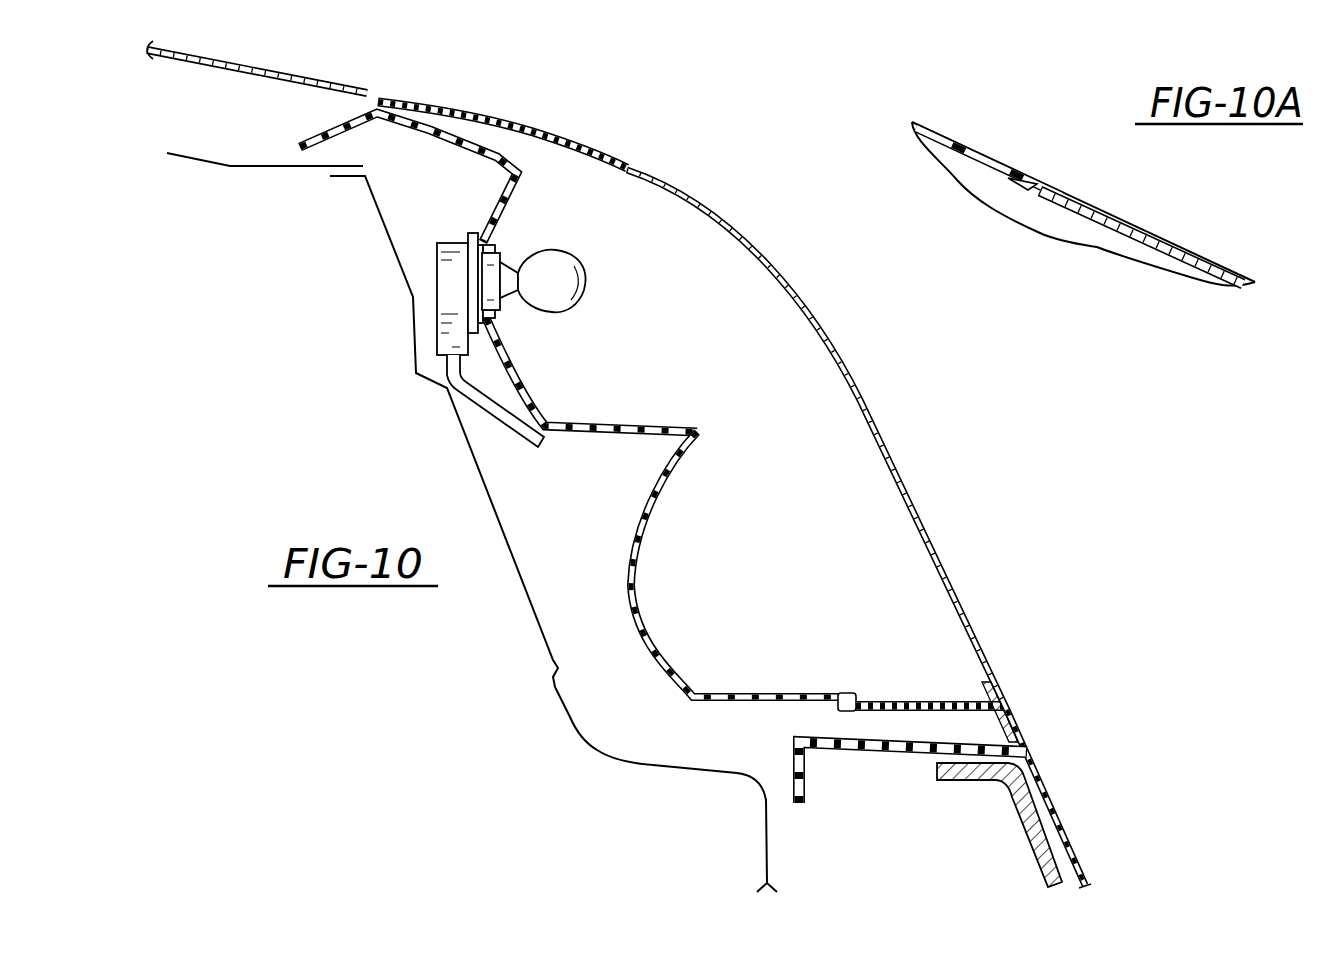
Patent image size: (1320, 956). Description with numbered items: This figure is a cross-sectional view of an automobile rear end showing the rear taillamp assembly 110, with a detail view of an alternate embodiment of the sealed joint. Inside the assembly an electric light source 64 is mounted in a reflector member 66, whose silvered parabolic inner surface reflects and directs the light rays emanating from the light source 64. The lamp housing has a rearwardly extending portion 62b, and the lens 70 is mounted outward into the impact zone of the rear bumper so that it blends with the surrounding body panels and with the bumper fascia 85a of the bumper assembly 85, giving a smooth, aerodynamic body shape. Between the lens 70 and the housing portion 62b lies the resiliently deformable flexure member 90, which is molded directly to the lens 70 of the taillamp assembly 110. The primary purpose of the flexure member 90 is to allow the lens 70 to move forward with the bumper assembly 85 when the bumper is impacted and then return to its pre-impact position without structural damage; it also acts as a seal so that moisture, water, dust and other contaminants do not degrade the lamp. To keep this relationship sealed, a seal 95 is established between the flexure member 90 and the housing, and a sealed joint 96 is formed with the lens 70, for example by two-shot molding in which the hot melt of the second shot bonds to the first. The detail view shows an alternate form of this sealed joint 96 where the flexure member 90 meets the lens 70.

In FIG. 10, the rear taillamp assembly 110 is at (455, 89).
In FIG. 10, the flexure member 90 is at (540, 142).
In FIG. 10A, the flexure member 90 is at (987, 139).
In FIG. 10, the sealed joint 96 is at (640, 173).
In FIG. 10A, the sealed joint 96 is at (1085, 179).
In FIG. 10, the lens 70 is at (832, 338).
In FIG. 10A, the lens 70 is at (1173, 229).
In FIG. 10, the electric light source 64 is at (586, 282).
In FIG. 10, the reflector member 66 is at (540, 412).
In FIG. 10, the rearwardly extending portion 62b is at (706, 700).
In FIG. 10, the bumper assembly 85 is at (1094, 758).
In FIG. 10, the bumper fascia 85a is at (1053, 810).
In FIG. 10, the seal 95 is at (893, 747).